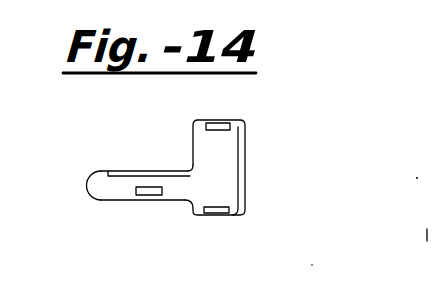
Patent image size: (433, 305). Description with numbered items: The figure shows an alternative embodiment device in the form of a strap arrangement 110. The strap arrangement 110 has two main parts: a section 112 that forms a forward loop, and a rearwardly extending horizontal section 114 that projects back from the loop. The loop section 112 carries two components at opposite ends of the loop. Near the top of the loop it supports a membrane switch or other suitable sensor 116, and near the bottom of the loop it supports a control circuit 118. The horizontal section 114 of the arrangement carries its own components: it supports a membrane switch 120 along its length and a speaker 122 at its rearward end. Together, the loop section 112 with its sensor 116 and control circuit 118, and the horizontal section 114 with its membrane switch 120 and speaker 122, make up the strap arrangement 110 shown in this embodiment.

The strap arrangement 110 is at (265, 143).
The section forming a forward loop 112 is at (225, 162).
The rearwardly extending horizontal section 114 is at (152, 170).
The membrane switch or other suitable sensor 116 is at (222, 123).
The control circuit 118 is at (223, 214).
The membrane switch 120 is at (142, 195).
The speaker 122 is at (100, 170).